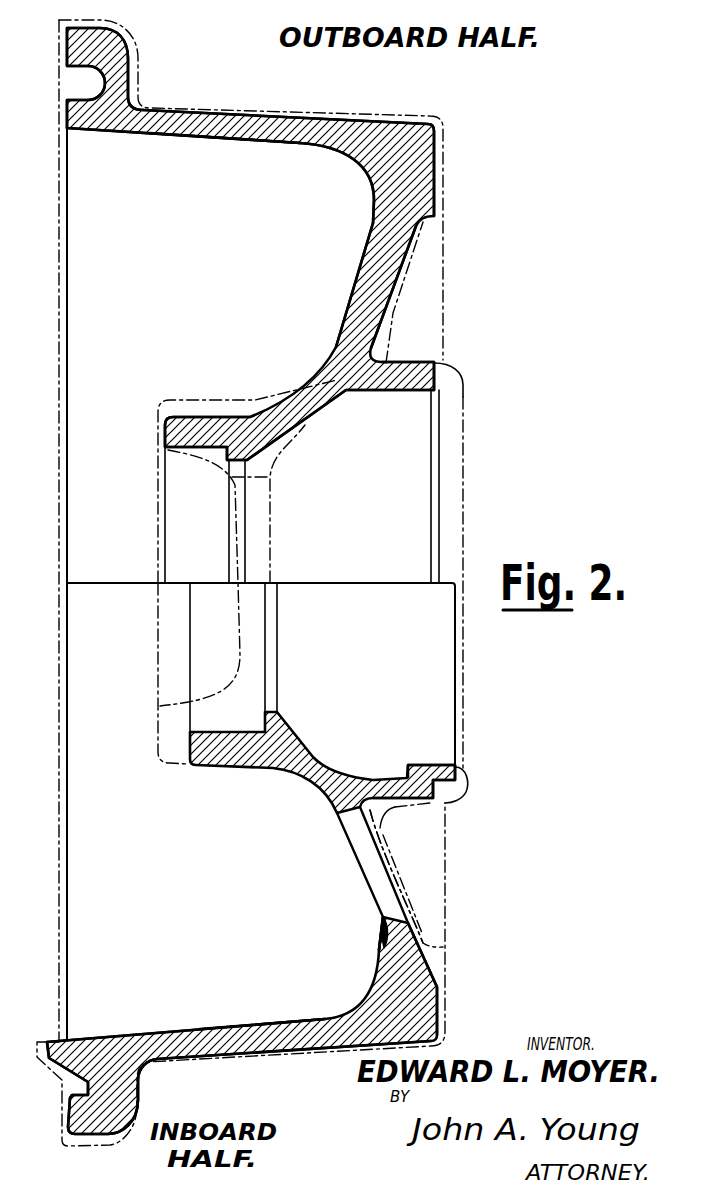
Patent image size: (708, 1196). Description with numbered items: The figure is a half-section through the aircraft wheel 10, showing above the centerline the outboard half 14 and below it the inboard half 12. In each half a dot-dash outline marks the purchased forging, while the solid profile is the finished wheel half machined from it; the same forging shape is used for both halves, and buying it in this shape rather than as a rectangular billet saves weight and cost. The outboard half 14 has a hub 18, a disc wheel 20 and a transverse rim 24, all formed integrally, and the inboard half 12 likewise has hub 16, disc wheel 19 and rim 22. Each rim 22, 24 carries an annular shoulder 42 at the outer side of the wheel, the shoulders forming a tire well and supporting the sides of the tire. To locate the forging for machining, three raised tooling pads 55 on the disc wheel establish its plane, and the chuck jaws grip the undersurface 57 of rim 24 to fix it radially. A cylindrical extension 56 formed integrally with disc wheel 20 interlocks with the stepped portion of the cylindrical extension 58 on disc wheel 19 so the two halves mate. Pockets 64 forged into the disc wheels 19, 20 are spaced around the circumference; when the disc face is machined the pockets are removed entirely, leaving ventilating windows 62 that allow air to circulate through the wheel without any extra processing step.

The aircraft wheel 10 is at (347, 167).
The inboard half 12 is at (427, 978).
The outboard half 14 is at (437, 128).
The hub portion 16 is at (317, 778).
The hub portion 18 is at (212, 427).
The disc wheel 19 is at (357, 863).
The disc wheel 20 is at (364, 285).
The transverse rim portion 22 is at (252, 1025).
The transverse rim portion 24 is at (286, 128).
The annular shoulder 42 is at (110, 50).
The tooling pad 55 is at (379, 223).
The cylindrical extension 56 is at (413, 368).
The undersurface of the rim 57 is at (238, 140).
The cylindrical extension 58 is at (427, 760).
The ventilating window 62 is at (383, 917).
The pocket 64 is at (397, 845).